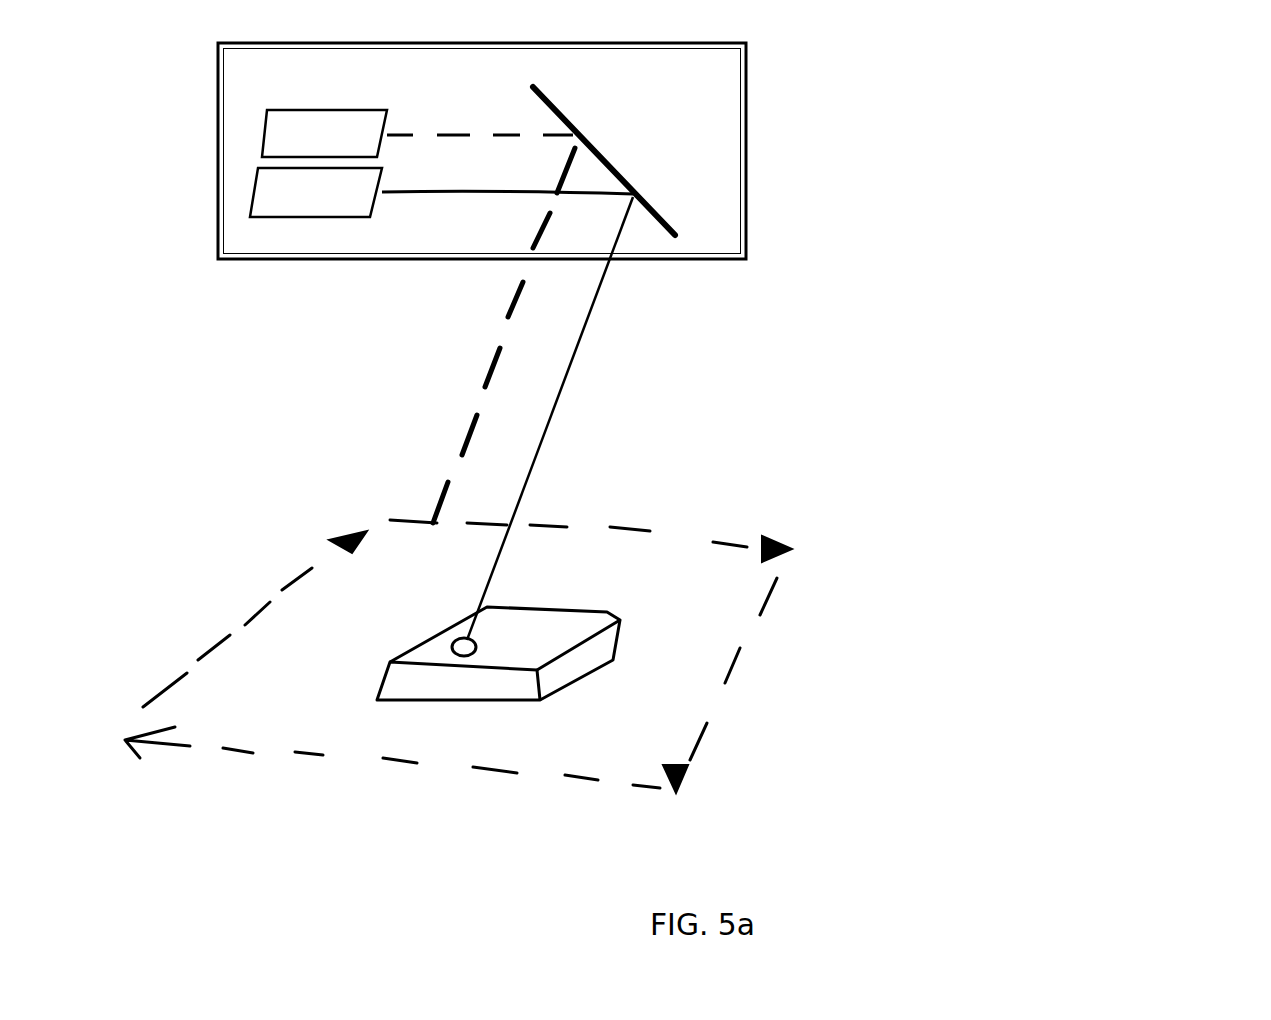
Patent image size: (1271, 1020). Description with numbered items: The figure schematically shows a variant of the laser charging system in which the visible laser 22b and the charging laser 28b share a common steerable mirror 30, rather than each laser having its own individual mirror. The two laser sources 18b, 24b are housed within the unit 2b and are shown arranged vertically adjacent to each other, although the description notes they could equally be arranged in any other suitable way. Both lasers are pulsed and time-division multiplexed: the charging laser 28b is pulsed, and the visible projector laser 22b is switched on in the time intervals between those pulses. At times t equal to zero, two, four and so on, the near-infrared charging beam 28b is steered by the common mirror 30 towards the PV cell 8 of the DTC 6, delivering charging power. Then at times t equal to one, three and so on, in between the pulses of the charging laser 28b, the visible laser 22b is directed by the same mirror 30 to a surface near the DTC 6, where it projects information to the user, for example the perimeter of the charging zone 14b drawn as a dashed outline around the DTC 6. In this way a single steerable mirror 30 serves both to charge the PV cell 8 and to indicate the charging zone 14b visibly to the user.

The sensor housing 2b is at (217, 80).
The laser source 18b is at (352, 148).
The laser source 24b is at (347, 202).
The common steerable mirror 30 is at (607, 157).
The visible laser 22b is at (490, 370).
The charging laser 28b is at (557, 393).
The charging zone 14b is at (257, 607).
The DTC 6 is at (587, 613).
The PV cell 8 is at (397, 660).